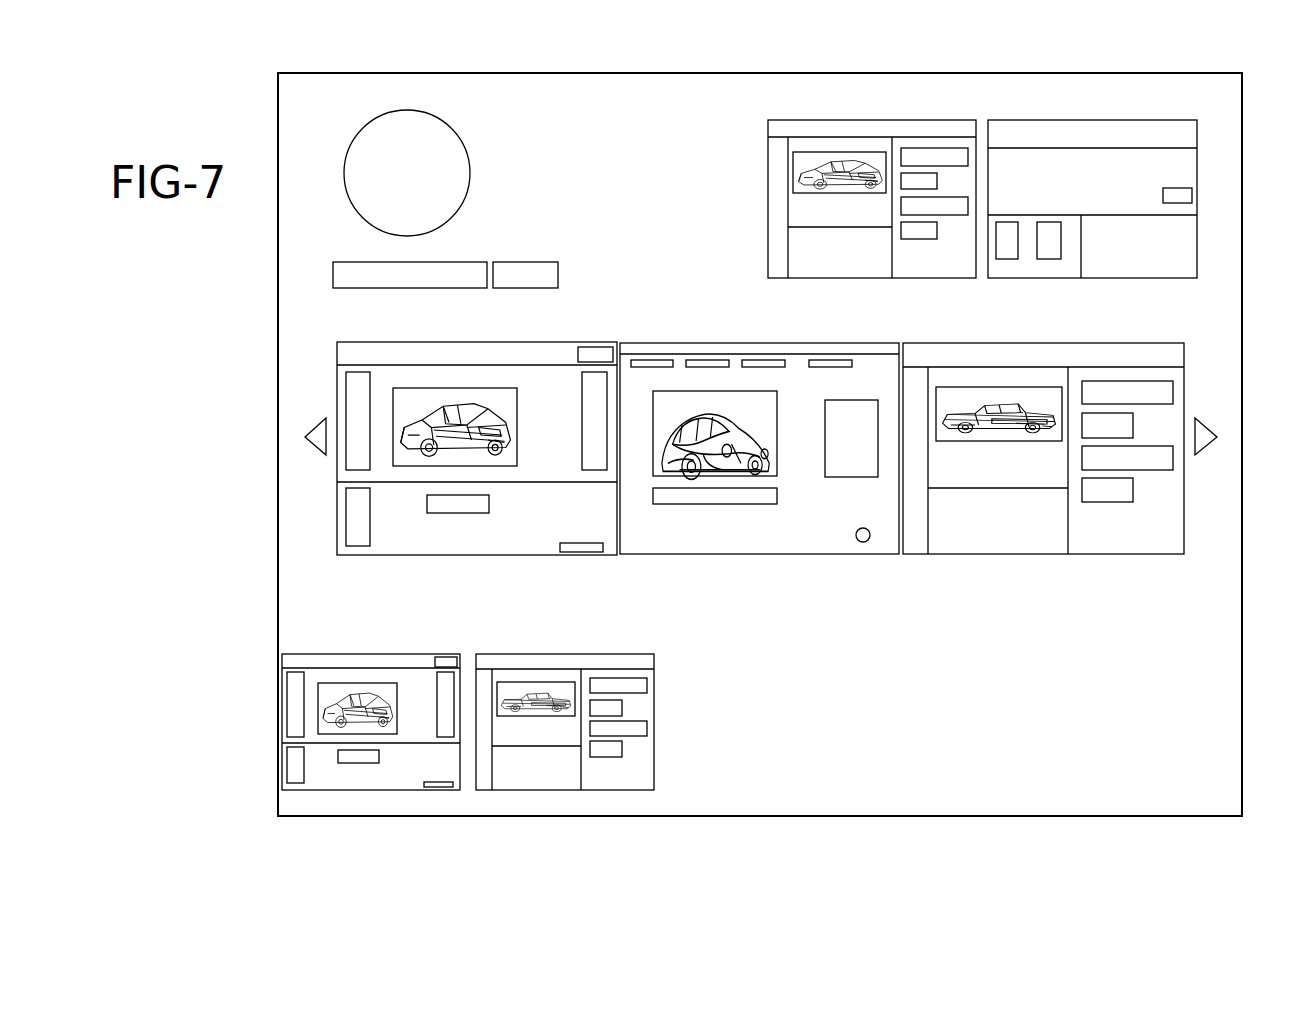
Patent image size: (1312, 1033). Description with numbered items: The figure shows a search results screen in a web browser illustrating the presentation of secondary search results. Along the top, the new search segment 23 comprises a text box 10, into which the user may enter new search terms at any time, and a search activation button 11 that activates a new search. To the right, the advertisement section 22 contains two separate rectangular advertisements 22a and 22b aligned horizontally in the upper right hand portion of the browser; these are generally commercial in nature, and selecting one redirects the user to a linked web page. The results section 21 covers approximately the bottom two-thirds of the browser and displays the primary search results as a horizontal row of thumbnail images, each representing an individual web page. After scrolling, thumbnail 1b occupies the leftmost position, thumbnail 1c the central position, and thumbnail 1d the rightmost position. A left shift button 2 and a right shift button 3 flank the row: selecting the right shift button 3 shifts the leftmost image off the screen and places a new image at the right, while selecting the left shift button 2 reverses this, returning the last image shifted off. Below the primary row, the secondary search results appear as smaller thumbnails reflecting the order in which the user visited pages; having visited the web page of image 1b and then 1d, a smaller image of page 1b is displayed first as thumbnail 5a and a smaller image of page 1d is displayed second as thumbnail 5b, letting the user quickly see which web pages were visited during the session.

The thumbnail image 1b is at (583, 556).
The thumbnail image 1c is at (848, 556).
The thumbnail image 1d is at (1132, 556).
The left shift button 2 is at (326, 420).
The right shift button 3 is at (1203, 420).
The secondary search result thumbnail 5a is at (388, 792).
The secondary search result thumbnail 5b is at (654, 712).
The text box 10 is at (333, 285).
The search activation button 11 is at (531, 270).
The results section 21 is at (258, 649).
The advertisement section 22 is at (1218, 70).
The advertisement 22a is at (768, 185).
The advertisement 22b is at (1197, 172).
The new search segment 23 is at (563, 68).